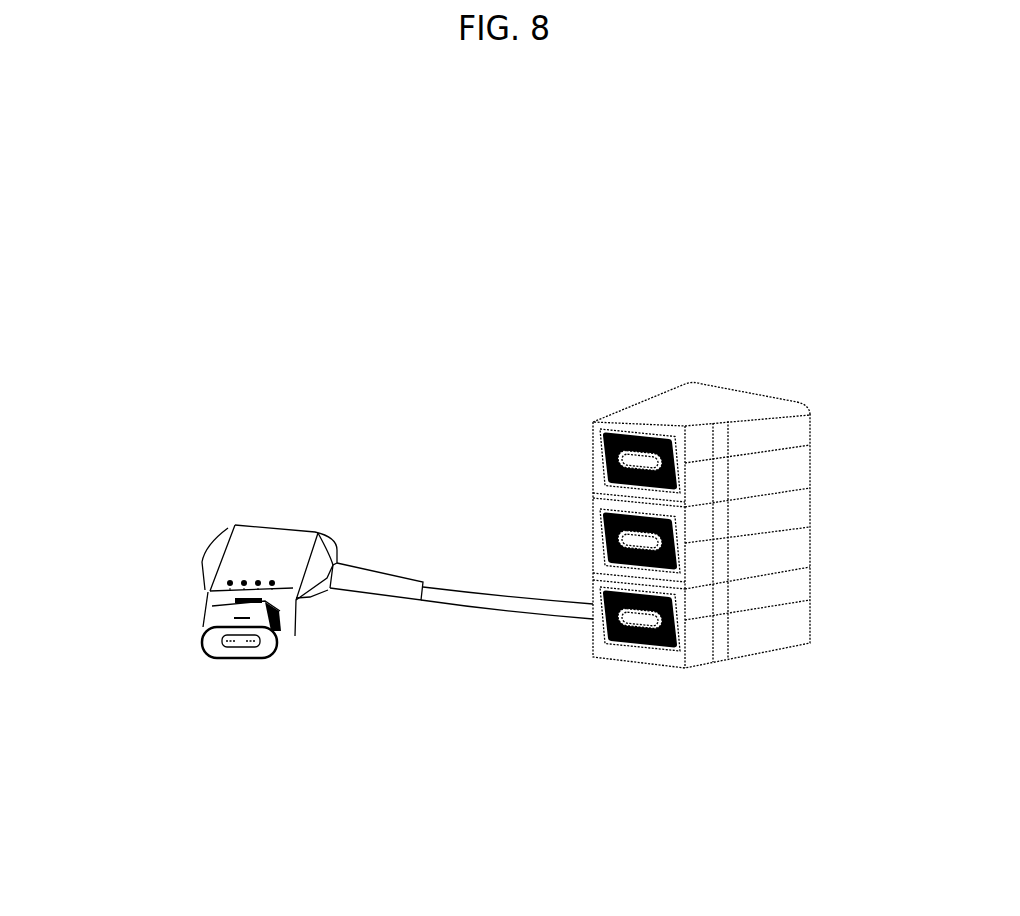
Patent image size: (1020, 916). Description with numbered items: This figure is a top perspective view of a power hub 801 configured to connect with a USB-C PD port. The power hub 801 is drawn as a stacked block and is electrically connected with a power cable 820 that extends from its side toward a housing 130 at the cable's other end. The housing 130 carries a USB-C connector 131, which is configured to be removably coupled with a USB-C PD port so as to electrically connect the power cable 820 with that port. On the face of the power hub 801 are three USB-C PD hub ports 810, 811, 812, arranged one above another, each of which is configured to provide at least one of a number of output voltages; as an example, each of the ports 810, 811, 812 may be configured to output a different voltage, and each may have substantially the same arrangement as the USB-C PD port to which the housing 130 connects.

The housing 130 is at (198, 522).
The USB-C connector 131 is at (208, 652).
The power hub 801 is at (645, 385).
The USB-C PD hub port 810 is at (600, 452).
The USB-C PD hub port 811 is at (600, 535).
The USB-C PD hub port 812 is at (595, 603).
The power cable 820 is at (465, 625).